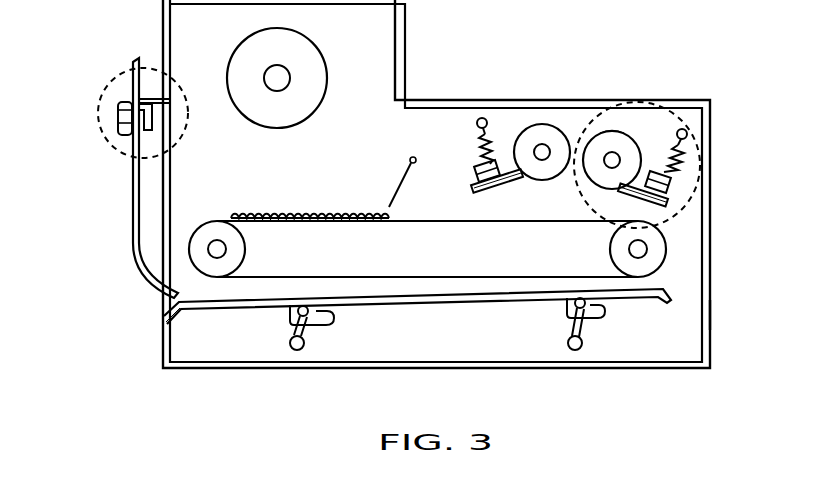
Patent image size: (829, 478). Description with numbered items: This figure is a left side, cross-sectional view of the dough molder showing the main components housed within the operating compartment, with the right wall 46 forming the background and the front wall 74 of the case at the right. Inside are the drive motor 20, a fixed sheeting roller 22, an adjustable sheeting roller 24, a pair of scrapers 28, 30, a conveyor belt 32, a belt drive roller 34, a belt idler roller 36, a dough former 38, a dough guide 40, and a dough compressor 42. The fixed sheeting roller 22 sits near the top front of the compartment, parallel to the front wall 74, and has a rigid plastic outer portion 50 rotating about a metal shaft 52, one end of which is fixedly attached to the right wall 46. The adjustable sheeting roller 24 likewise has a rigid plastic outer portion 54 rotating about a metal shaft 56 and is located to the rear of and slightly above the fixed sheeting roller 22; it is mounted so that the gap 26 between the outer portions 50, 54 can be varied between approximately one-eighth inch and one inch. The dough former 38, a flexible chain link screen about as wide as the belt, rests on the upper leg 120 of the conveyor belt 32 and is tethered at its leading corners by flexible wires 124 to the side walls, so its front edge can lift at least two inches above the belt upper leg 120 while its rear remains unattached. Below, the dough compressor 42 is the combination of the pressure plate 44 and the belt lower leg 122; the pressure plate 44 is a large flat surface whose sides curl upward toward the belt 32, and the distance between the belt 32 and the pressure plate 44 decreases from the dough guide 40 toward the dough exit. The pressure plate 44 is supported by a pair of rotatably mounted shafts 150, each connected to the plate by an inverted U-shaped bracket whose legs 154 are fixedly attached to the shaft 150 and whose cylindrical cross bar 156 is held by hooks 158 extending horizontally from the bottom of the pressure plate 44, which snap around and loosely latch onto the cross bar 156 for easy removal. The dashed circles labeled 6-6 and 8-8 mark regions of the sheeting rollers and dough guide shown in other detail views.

The drive motor 20 is at (313, 40).
The fixed sheeting roller 22 is at (623, 131).
The adjustable sheeting roller 24 is at (522, 131).
The gap 26 is at (577, 125).
The scraper 28 is at (669, 200).
The scraper 30 is at (468, 184).
The conveyor belt 32 is at (572, 224).
The belt drive roller 34 is at (669, 249).
The belt idler roller 36 is at (186, 252).
The dough former 38 is at (310, 201).
The dough guide 40 is at (132, 201).
The dough compressor 42 is at (204, 296).
The pressure plate 44 is at (401, 300).
The right wall 46 is at (212, 42).
The outer portion 50 is at (635, 142).
The shaft 52 is at (605, 166).
The outer portion 54 is at (529, 183).
The shaft 56 is at (541, 144).
The front wall 74 is at (711, 313).
The belt upper leg 120 is at (434, 222).
The belt lower leg 122 is at (348, 276).
The flexible wires 124 is at (395, 182).
The shaft 150 is at (289, 346).
The bracket leg 154 is at (306, 331).
The cross bar 156 is at (298, 306).
The hook 158 is at (288, 318).
The section line 6-6 is at (670, 104).
The section line 8-8 is at (103, 91).